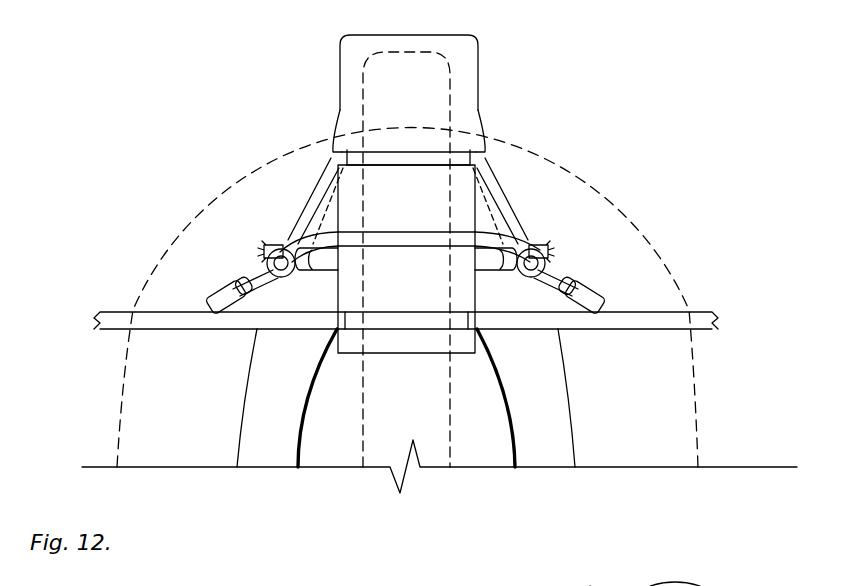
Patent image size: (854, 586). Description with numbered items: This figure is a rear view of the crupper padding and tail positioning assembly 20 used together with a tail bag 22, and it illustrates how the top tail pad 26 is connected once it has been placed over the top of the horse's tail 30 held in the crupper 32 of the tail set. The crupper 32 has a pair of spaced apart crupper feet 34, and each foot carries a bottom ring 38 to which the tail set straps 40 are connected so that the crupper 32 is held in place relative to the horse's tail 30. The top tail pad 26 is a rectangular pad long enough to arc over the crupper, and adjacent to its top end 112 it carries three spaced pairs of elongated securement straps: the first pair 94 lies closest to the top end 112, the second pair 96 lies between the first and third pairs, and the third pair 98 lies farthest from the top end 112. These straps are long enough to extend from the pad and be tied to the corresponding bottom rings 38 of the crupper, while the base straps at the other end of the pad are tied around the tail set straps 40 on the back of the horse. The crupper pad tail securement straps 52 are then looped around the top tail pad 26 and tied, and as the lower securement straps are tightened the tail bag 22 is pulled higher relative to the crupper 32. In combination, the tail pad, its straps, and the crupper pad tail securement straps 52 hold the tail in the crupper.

The crupper padding and tail positioning assembly 20 is at (537, 117).
The tail bag 22 is at (532, 452).
The top tail pad 26 is at (350, 45).
The horse's tail 30 is at (455, 63).
The crupper feet 34 is at (483, 221).
The bottom ring 38 is at (478, 278).
The tail set straps 40 is at (223, 300).
The first pair of top tail pad securement straps 94 is at (693, 345).
The second pair of top tail pad securement straps 96 is at (432, 240).
The third pair of top tail pad securement straps 98 is at (423, 157).
The top end of the tail pad 112 is at (357, 347).
The crupper 32 is at (590, 585).
The crupper pad tail securement straps 52 is at (627, 585).